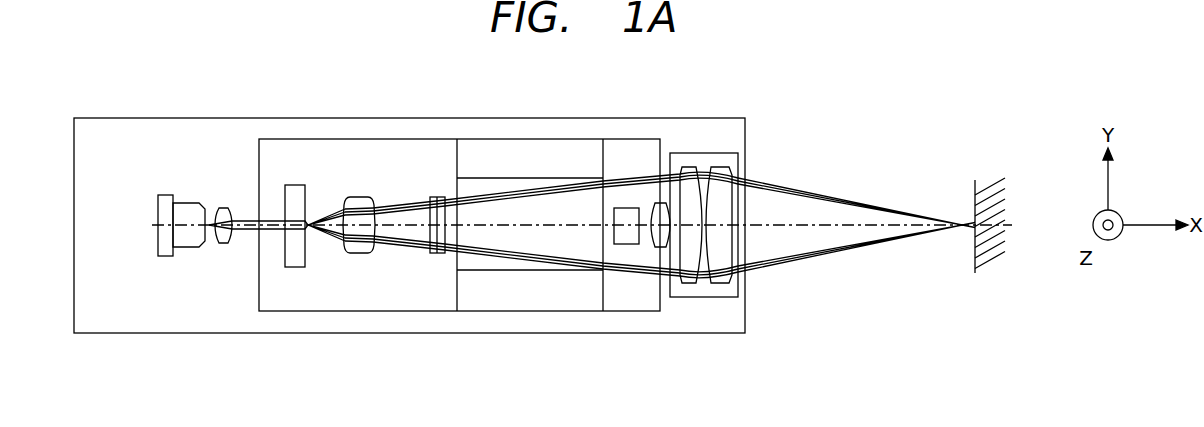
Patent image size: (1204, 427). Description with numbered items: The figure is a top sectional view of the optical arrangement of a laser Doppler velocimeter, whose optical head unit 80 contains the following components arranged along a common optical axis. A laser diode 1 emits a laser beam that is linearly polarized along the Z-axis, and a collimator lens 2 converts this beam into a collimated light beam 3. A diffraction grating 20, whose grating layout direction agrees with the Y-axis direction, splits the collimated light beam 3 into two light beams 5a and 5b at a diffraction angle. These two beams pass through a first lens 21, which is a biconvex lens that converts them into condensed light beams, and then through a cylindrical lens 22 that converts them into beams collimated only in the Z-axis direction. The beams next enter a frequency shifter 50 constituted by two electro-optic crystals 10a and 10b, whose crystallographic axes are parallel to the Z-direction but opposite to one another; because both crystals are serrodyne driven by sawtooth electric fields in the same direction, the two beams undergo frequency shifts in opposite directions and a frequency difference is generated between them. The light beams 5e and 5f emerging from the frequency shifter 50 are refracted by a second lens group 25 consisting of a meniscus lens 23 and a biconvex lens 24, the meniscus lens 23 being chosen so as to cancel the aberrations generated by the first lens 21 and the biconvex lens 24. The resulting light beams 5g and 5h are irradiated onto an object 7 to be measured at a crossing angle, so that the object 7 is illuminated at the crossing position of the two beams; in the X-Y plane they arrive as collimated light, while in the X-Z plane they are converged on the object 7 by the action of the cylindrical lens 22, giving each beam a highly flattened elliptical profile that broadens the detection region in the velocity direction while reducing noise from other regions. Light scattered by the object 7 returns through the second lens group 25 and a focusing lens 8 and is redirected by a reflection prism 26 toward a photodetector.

The optical head unit 80 is at (112, 133).
The laser diode 1 is at (188, 203).
The collimator lens 2 is at (231, 212).
The collimated light beam 3 is at (246, 222).
The diffraction grating 20 is at (295, 185).
The first lens 21 is at (358, 254).
The cylindrical lens 22 is at (438, 196).
The light beam 5a is at (327, 214).
The light beam 5b is at (329, 240).
The electro-optic crystal 10a is at (505, 152).
The electro-optic crystal 10b is at (475, 283).
The frequency shifter 50 is at (540, 155).
The light beam 5e is at (630, 182).
The light beam 5f is at (625, 268).
The reflection prism 26 is at (636, 208).
The focusing lens 8 is at (660, 205).
The second lens group 25 is at (718, 153).
The meniscus lens 23 is at (690, 284).
The biconvex lens 24 is at (721, 284).
The light beam 5g is at (818, 195).
The light beam 5h is at (825, 255).
The object to be measured 7 is at (998, 200).